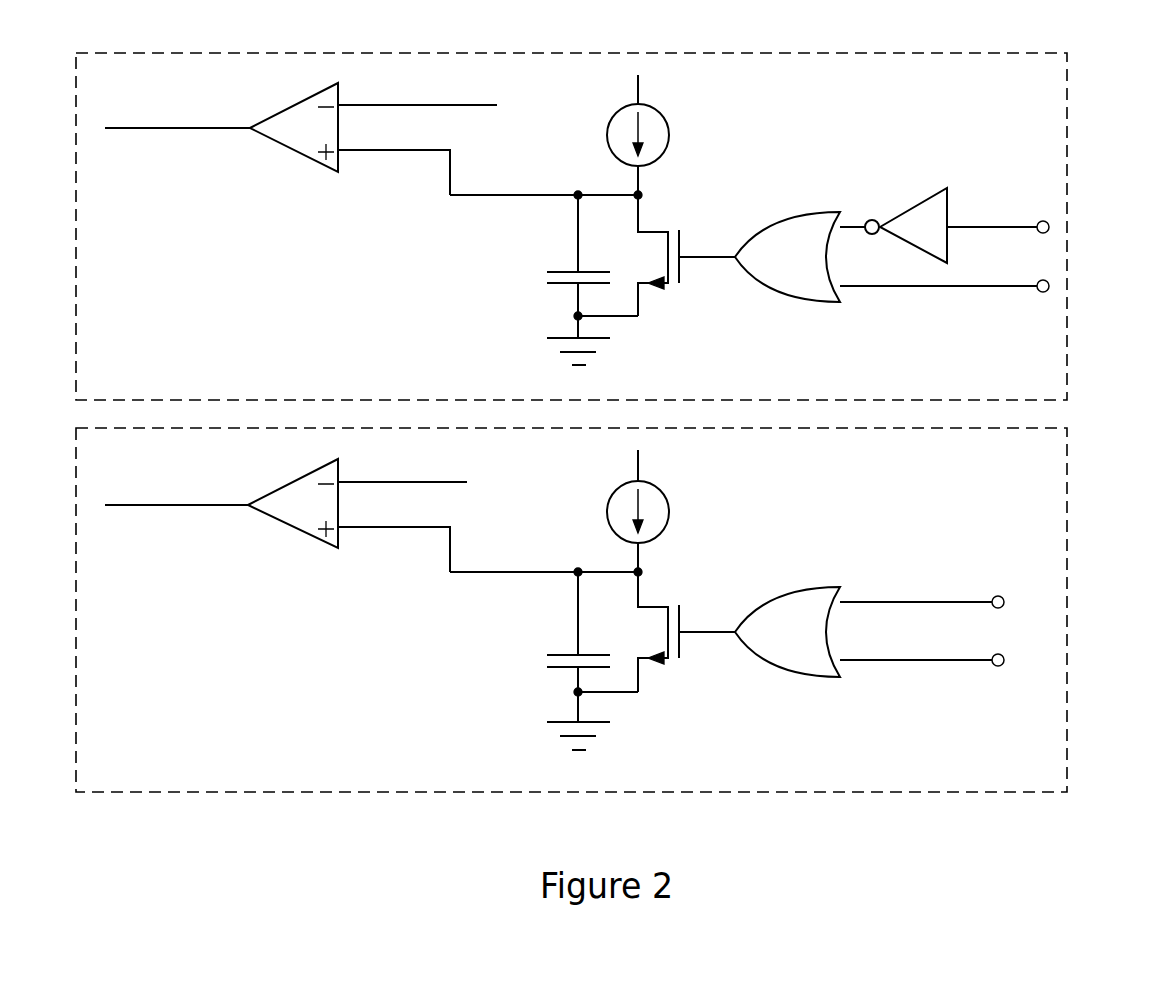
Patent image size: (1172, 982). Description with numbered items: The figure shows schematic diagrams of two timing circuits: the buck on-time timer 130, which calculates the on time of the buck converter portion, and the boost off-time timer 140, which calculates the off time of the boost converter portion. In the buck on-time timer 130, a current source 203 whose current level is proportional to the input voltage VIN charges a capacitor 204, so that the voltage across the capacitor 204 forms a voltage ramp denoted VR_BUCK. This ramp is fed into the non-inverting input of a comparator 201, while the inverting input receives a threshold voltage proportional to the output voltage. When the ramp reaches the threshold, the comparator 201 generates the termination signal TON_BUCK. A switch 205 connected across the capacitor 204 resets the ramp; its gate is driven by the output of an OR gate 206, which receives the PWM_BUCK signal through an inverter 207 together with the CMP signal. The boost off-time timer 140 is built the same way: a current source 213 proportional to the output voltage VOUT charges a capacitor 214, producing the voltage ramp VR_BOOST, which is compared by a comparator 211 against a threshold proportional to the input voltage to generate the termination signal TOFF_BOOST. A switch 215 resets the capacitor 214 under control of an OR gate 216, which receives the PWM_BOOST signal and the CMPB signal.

The buck on-time timer 130 is at (863, 68).
The boost off-time timer 140 is at (1043, 452).
The comparator 201 is at (301, 137).
The current source 203 is at (676, 135).
The capacitor 204 is at (574, 280).
The switch 205 is at (686, 256).
The OR gate 206 is at (892, 275).
The inverter 207 is at (960, 216).
The comparator 211 is at (286, 513).
The current source 213 is at (689, 511).
The capacitor 214 is at (571, 661).
The switch 215 is at (686, 632).
The OR gate 216 is at (869, 643).